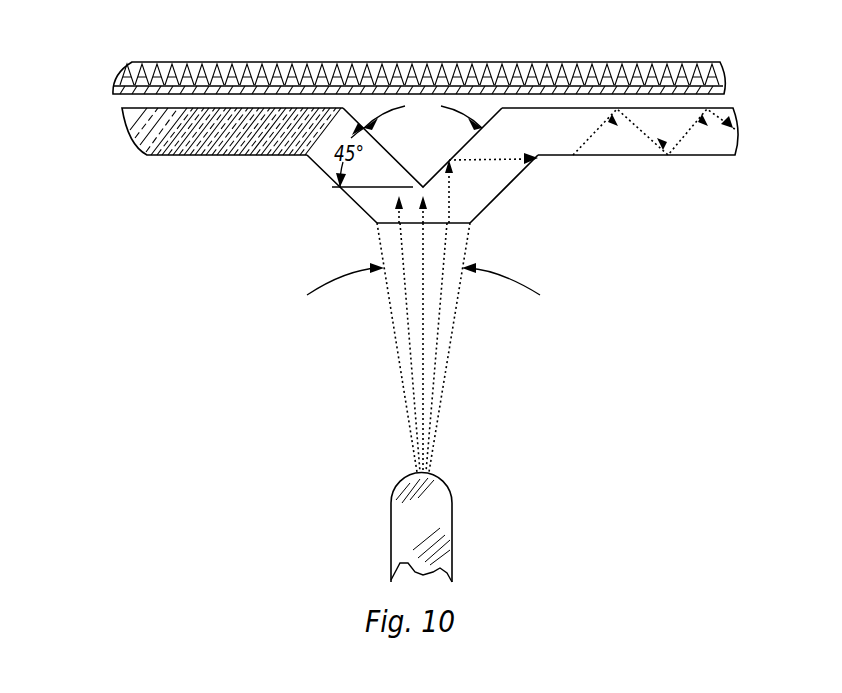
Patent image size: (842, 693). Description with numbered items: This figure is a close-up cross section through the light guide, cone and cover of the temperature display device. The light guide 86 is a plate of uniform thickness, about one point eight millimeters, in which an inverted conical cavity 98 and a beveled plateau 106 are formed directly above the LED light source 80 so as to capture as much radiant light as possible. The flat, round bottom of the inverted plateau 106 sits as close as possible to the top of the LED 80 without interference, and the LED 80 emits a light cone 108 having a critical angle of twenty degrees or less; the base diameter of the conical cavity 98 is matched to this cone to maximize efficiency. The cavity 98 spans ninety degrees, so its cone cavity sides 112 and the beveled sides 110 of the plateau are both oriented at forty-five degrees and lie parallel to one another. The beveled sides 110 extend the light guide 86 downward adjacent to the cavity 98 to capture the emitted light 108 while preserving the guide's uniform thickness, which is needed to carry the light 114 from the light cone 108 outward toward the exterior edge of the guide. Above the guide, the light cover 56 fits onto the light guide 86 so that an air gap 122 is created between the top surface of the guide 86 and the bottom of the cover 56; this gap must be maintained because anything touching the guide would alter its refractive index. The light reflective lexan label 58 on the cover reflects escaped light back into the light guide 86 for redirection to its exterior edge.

The light cover 56 is at (587, 62).
The light reflective lexan label 58 is at (289, 88).
The air gap 122 is at (131, 99).
The light guide 86 is at (192, 145).
The inverted conical cavity 98 is at (452, 128).
The cone cavity sides 112 is at (458, 150).
The beveled plateau 106 is at (458, 226).
The beveled sides 110 is at (353, 203).
The light 114 is at (493, 160).
The emitted light cone 108 is at (473, 287).
The LED light source 80 is at (431, 527).